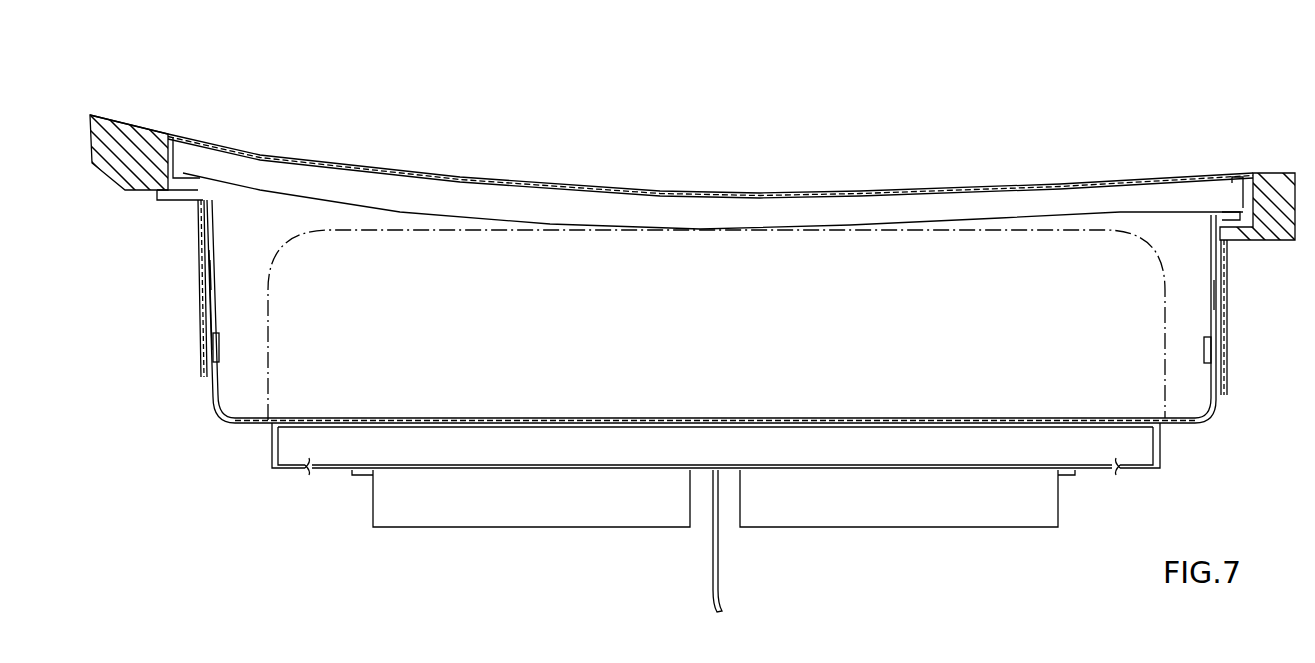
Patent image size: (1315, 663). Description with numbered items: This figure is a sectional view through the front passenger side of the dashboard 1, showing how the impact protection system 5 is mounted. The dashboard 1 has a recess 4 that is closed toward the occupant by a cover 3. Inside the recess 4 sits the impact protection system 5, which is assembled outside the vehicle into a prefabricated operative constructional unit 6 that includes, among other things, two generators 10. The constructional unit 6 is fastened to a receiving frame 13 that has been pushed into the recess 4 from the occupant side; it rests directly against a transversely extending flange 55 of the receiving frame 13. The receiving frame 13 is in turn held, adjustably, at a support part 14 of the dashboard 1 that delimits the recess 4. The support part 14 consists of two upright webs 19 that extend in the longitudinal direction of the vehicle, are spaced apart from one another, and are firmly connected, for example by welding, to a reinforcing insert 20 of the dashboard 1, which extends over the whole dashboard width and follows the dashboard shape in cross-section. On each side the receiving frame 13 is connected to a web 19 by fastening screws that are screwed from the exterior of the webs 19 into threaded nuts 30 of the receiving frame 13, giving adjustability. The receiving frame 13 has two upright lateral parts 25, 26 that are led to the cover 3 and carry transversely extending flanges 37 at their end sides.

The dashboard 1 is at (129, 128).
The cover 3 is at (600, 190).
The recess 4 is at (700, 317).
The impact protection system 5 is at (636, 532).
The prefabricated operative constructional unit 6 is at (892, 240).
The generators 10 is at (713, 498).
The receiving frame 13 is at (206, 402).
The support part 14 is at (196, 304).
The upright webs 19 is at (199, 264).
The reinforcing insert 20 is at (136, 192).
The upright lateral part 25 is at (1216, 298).
The upright lateral part 26 is at (210, 276).
The threaded nuts 30 is at (219, 342).
The flanges 37 is at (1232, 214).
The transversely extending flange 55 is at (240, 416).